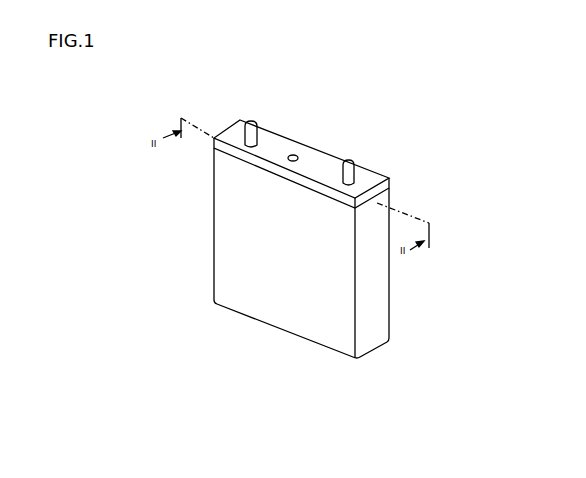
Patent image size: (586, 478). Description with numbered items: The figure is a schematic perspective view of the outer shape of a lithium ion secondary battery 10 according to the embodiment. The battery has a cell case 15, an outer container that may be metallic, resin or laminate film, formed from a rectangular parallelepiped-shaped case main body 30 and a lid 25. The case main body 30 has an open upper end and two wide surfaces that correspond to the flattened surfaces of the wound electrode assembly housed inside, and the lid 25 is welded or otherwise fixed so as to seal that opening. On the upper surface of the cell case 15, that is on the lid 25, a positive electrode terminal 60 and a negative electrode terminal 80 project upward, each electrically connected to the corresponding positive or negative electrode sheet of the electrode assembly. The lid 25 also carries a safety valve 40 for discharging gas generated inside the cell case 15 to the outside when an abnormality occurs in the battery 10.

The lithium ion secondary battery 10 is at (473, 85).
The cell case 15 is at (284, 309).
The lid 25 is at (391, 183).
The case main body 30 is at (389, 318).
The safety valve 40 is at (292, 155).
The positive electrode terminal 60 is at (253, 120).
The negative electrode terminal 80 is at (348, 159).